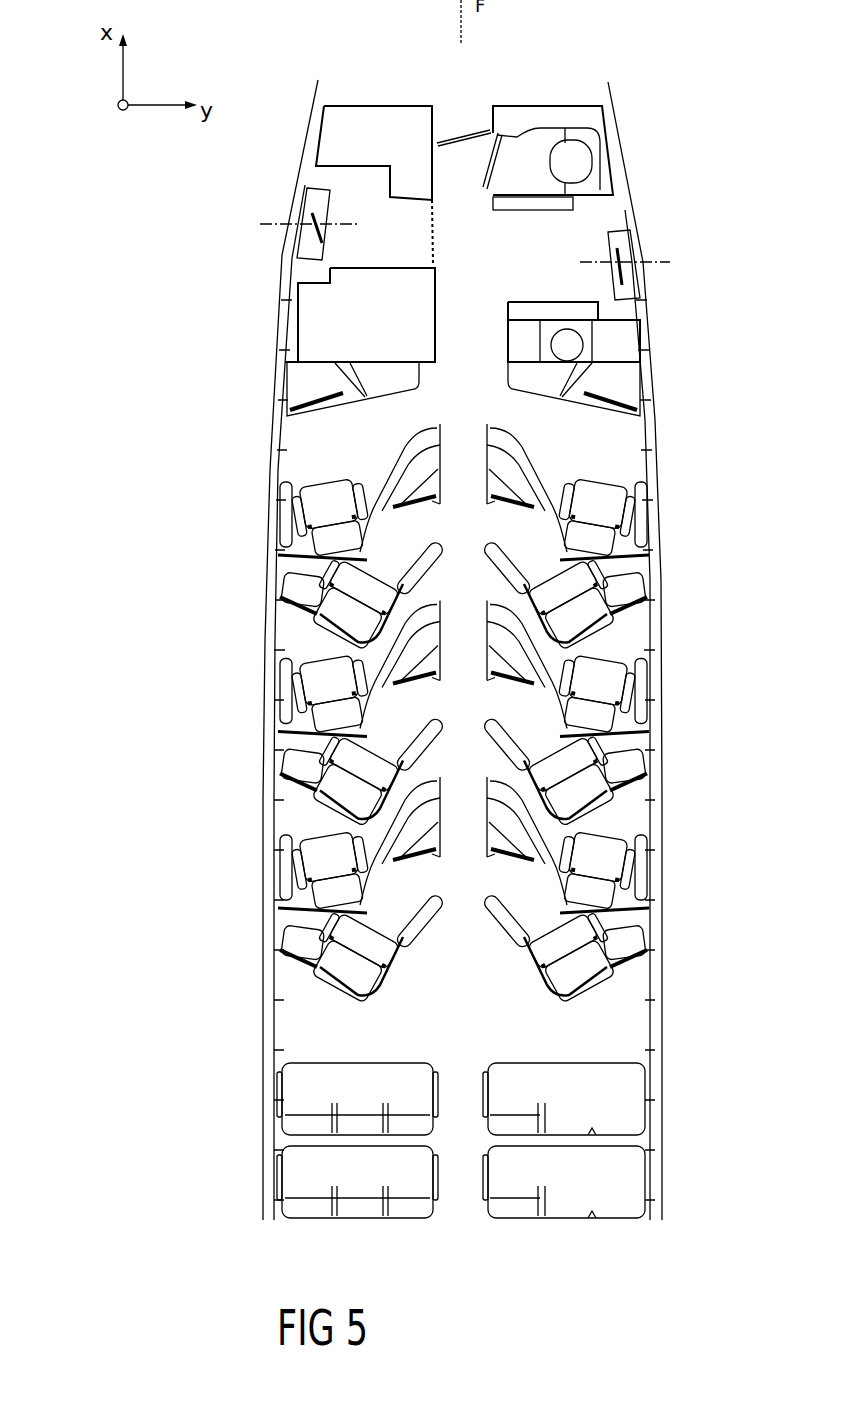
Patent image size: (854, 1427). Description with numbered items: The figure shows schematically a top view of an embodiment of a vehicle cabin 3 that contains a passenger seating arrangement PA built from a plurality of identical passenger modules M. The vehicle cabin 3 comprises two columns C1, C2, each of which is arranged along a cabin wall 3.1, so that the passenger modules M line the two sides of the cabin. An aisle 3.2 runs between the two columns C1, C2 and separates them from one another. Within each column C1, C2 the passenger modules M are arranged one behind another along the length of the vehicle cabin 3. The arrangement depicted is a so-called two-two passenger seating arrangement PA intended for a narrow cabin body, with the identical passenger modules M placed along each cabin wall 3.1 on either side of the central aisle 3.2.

The vehicle cabin 3 is at (497, 262).
The cabin wall 3.1 is at (268, 547).
The aisle 3.2 is at (460, 440).
The first column C1 is at (313, 358).
The second column C2 is at (615, 388).
The passenger module M is at (252, 724).
The passenger seating arrangement PA is at (624, 1035).